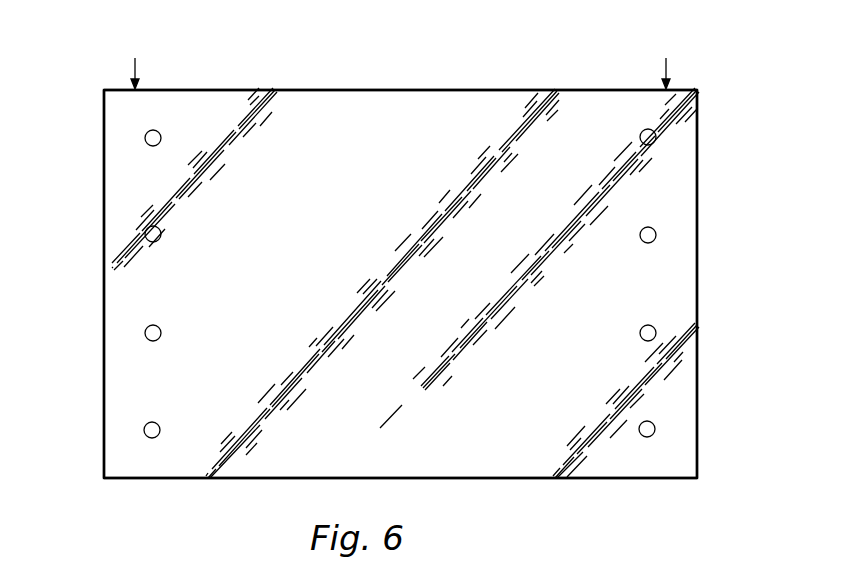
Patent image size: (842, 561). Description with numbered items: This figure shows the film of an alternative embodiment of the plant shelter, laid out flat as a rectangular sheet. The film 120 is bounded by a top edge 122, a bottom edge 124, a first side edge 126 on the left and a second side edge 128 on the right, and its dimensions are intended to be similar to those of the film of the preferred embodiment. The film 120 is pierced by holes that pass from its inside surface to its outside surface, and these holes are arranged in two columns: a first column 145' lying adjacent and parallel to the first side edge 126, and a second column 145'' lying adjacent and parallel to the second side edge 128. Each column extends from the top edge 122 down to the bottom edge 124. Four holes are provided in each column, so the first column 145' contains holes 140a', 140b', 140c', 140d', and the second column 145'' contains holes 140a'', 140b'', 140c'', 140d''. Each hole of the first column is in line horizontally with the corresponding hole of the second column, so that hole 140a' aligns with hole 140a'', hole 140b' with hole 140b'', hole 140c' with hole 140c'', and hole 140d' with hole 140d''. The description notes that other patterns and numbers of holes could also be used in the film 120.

The film 120 is at (365, 260).
The top edge 122 is at (338, 89).
The bottom edge 124 is at (540, 480).
The first side edge 126 is at (104, 178).
The second side edge 128 is at (700, 157).
The first column 145' is at (134, 62).
The second column 145'' is at (668, 62).
The hole 140a' is at (185, 121).
The hole 140b' is at (208, 236).
The hole 140c' is at (201, 338).
The hole 140d' is at (193, 404).
The hole 140a'' is at (594, 139).
The hole 140b'' is at (613, 250).
The hole 140c'' is at (587, 336).
The hole 140d'' is at (587, 411).